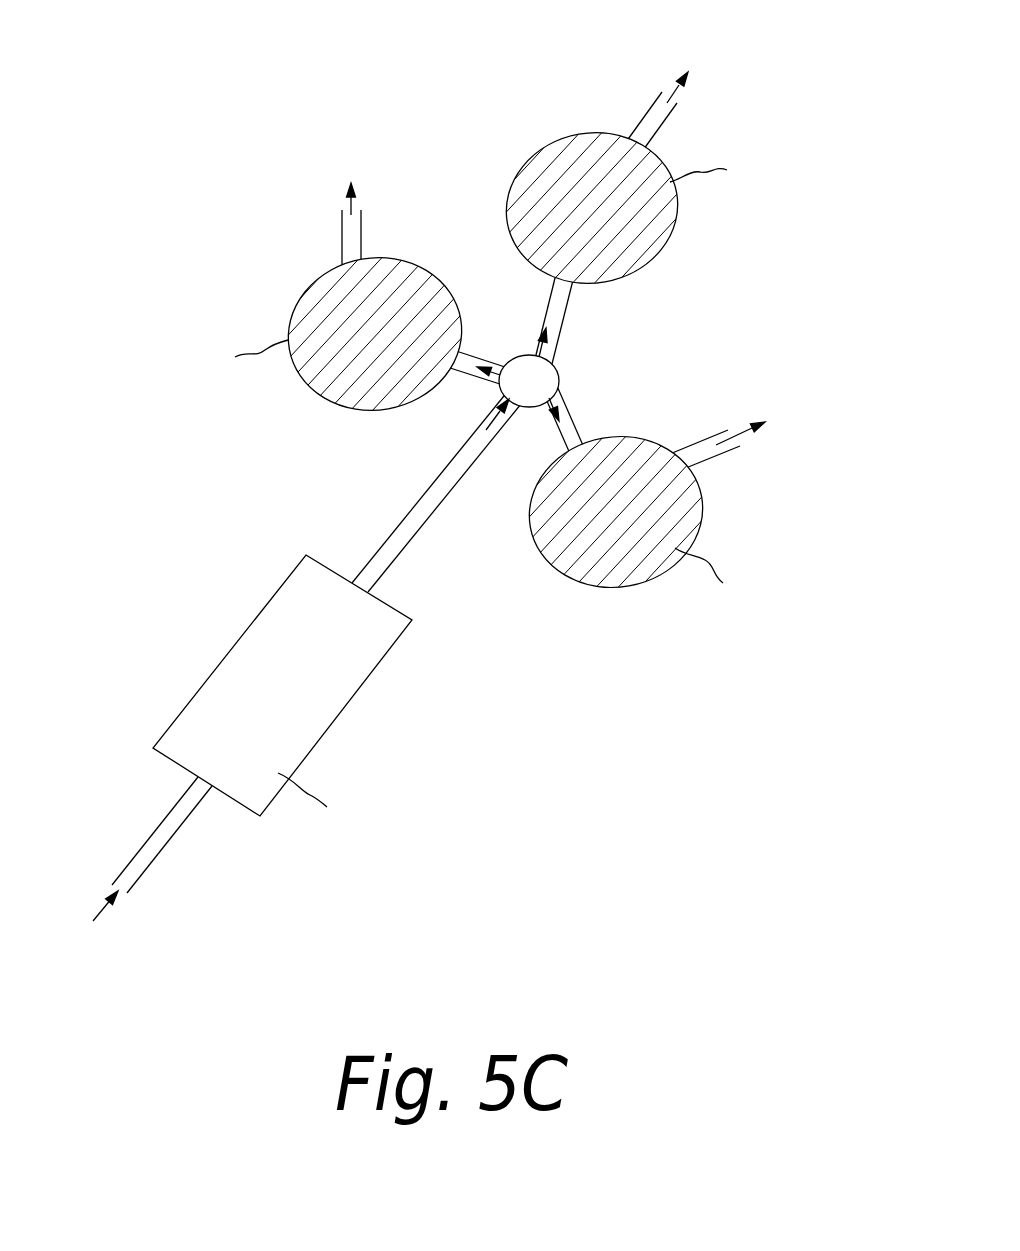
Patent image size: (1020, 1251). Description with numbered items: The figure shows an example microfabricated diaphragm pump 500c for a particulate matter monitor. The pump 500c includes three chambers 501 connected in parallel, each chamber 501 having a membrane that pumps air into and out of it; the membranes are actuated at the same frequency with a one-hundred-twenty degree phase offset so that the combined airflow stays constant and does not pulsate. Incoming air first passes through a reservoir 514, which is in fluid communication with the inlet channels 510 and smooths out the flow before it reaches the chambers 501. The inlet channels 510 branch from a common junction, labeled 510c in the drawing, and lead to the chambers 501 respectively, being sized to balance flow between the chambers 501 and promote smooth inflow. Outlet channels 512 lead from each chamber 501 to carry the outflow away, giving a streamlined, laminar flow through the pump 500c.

The microfabricated diaphragm pump 500c is at (127, 899).
The chamber 501 is at (488, 360).
The inlet channel 510 is at (467, 378).
The branched manifold 510c is at (468, 491).
The outlet channel 512 is at (336, 236).
The reservoir 514 is at (282, 686).